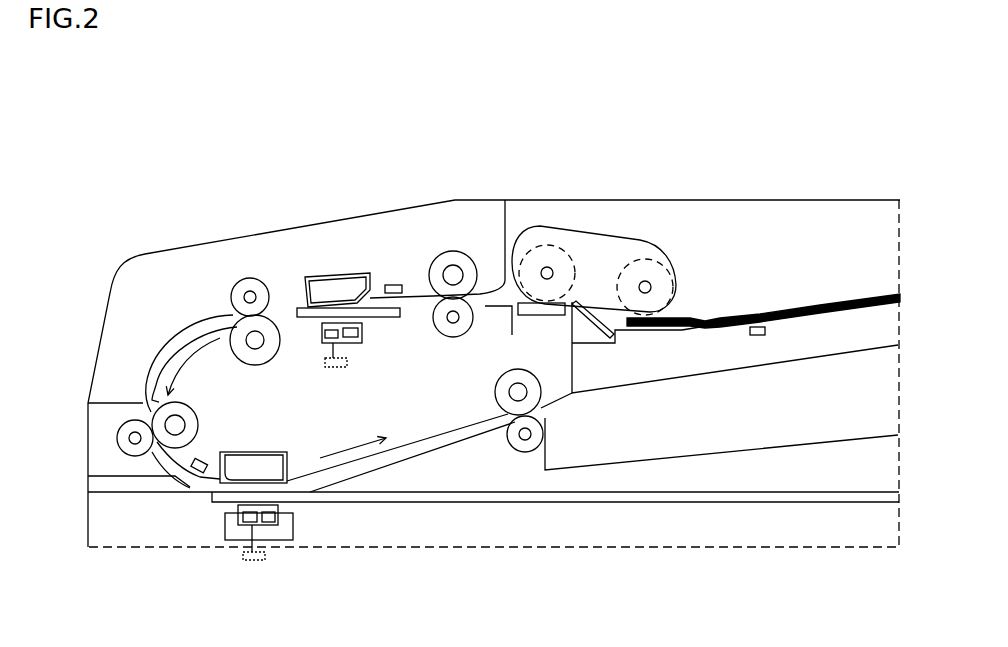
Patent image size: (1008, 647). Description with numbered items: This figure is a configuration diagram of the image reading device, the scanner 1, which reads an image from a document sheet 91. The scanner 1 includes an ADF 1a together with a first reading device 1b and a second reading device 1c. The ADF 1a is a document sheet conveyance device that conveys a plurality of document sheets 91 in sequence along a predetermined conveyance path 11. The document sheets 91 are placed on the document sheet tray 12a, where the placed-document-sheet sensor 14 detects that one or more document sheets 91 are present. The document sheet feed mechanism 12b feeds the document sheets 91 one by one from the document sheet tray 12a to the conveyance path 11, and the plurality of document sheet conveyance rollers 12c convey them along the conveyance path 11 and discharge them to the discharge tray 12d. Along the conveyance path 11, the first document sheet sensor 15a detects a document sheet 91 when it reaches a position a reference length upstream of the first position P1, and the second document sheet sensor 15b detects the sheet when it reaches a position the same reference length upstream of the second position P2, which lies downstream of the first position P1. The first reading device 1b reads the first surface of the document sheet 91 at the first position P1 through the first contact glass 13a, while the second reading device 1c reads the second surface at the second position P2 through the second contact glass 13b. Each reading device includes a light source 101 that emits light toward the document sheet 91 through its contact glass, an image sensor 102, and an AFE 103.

The scanner 1 is at (810, 123).
The ADF (Automatic Document Feeder) 1a is at (115, 275).
The first reading device 1b is at (297, 363).
The second reading device 1c is at (219, 551).
The conveyance path 11 is at (143, 375).
The document sheet tray 12a is at (850, 330).
The document sheet feed mechanism 12b is at (588, 230).
The document sheet conveyance rollers 12c is at (250, 276).
The discharge tray 12d is at (715, 452).
The first contact glass 13a is at (400, 317).
The second contact glass 13b is at (280, 502).
The placed-document-sheet sensor 14 is at (760, 337).
The first document sheet sensor 15a is at (393, 285).
The second document sheet sensor 15b is at (199, 473).
The document sheet 91 is at (867, 295).
The light source 101 is at (350, 343).
The image sensor 102 is at (330, 343).
The AFE (Analog Front End) 103 is at (342, 368).
The first position P1 is at (332, 308).
The second position P2 is at (250, 489).